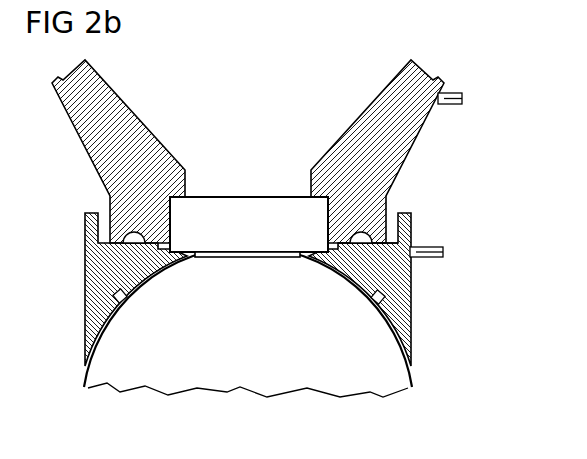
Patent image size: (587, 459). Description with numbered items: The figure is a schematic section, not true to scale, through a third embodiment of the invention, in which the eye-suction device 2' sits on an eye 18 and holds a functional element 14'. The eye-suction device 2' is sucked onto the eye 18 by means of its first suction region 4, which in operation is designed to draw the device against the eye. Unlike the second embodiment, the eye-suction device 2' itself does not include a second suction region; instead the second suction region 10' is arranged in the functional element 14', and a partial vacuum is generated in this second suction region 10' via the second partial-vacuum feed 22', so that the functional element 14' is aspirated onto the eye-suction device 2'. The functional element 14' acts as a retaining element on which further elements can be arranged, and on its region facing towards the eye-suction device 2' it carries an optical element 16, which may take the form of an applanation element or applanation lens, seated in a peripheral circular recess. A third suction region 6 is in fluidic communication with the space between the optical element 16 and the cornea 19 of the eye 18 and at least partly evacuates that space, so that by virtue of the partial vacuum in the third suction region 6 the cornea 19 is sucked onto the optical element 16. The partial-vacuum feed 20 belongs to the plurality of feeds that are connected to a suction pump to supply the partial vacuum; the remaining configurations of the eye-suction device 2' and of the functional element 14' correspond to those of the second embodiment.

The eye-suction device 2' is at (358, 290).
The first suction region 4 is at (370, 304).
The third suction region 6 is at (368, 265).
The second suction region 10' is at (249, 216).
The functional element 14' is at (351, 150).
The optical element 16 is at (245, 208).
The eye 18 is at (100, 378).
The cornea 19 is at (250, 258).
The partial-vacuum feed 20 is at (444, 253).
The second partial-vacuum feed 22' is at (480, 111).